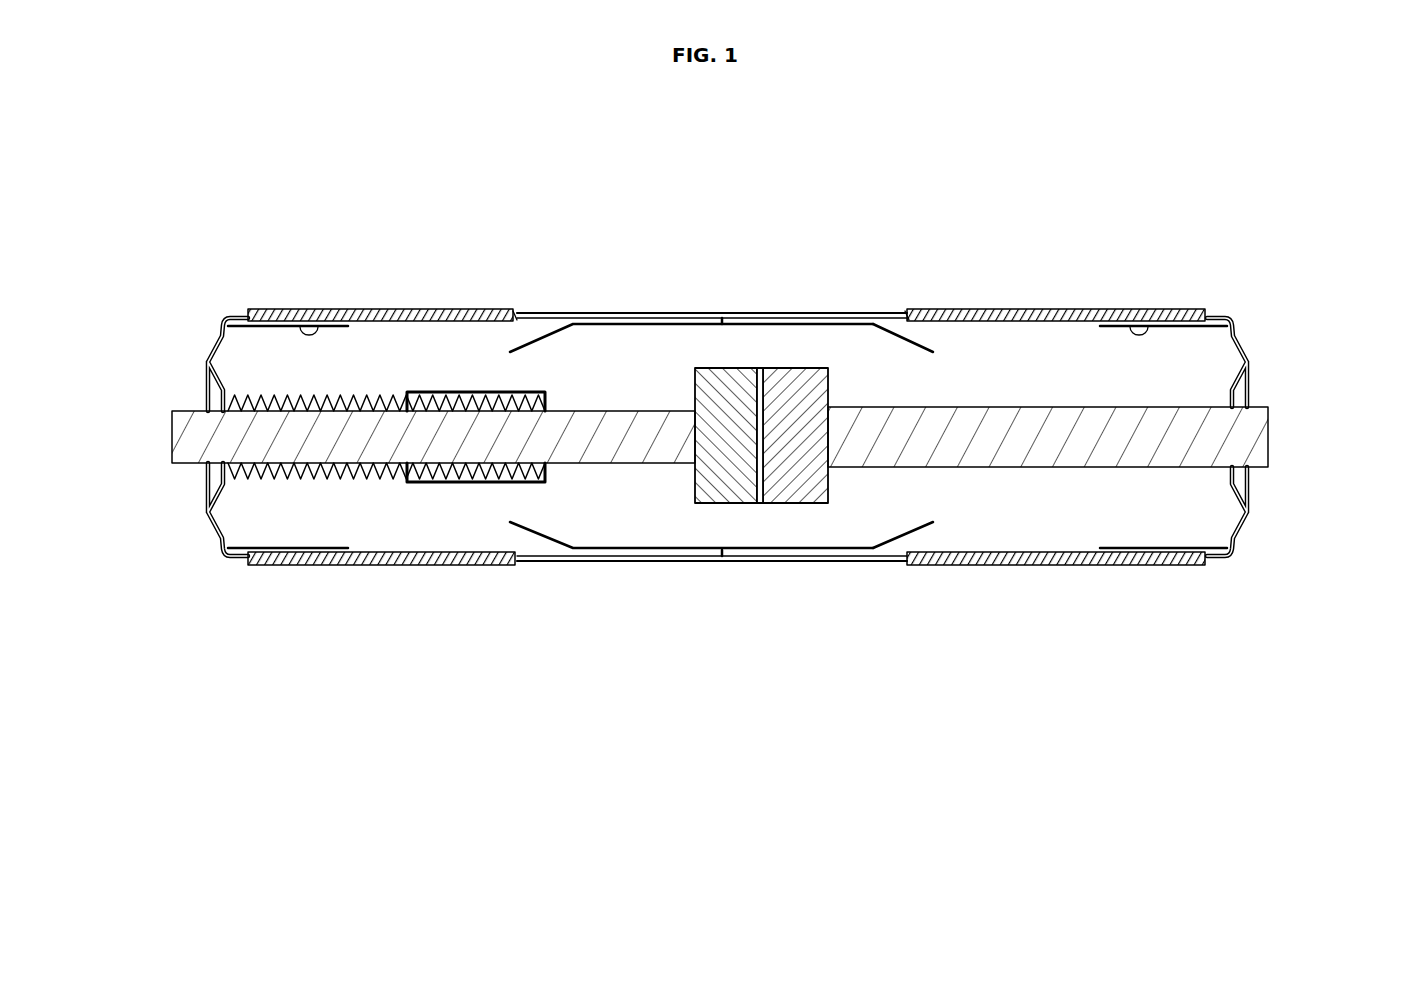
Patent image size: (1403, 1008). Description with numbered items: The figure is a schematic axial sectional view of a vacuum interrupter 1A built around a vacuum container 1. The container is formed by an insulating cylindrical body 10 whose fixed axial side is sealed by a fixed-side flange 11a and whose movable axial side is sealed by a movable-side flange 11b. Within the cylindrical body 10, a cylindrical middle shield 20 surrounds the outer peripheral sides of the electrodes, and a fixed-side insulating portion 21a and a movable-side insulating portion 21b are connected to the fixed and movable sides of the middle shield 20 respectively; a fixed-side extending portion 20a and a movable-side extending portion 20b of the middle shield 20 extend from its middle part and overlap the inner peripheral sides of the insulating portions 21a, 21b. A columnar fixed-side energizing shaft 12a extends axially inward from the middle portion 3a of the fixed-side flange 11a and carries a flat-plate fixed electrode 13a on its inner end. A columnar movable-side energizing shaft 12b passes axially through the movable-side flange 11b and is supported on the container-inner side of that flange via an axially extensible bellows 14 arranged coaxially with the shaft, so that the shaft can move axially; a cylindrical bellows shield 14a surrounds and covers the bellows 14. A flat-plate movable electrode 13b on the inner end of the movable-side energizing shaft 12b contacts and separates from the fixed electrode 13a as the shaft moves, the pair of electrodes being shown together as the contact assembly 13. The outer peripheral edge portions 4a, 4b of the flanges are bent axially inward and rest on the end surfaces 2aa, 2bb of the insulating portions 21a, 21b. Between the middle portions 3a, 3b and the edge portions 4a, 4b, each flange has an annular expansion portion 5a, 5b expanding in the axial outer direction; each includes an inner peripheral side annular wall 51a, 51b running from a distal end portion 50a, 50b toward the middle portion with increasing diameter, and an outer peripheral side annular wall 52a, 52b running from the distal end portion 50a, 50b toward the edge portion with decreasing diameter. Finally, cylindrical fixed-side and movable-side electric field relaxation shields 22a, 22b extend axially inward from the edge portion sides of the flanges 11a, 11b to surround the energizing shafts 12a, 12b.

The vacuum container 1 is at (305, 577).
The vacuum interrupter 1A is at (240, 585).
The insulating cylindrical body 10 is at (739, 352).
The middle shield 20 is at (709, 313).
The fixed-side extending portion 20a is at (890, 327).
The movable-side extending portion 20b is at (555, 328).
The fixed-side insulating portion 21a is at (905, 312).
The movable-side insulating portion 21b is at (514, 312).
The fixed-side electric field relaxation shield 22a is at (1115, 311).
The movable-side electric field relaxation shield 22b is at (333, 312).
The end surface 2aa is at (1228, 314).
The end surface 2bb is at (247, 314).
The middle portion 3a is at (1250, 481).
The middle portion 3b is at (226, 476).
The outer peripheral edge portion 4a is at (1237, 321).
The outer peripheral edge portion 4b is at (228, 319).
The annular expansion portion 5a is at (1303, 348).
The annular expansion portion 5b is at (151, 347).
The distal end portion 50a is at (1248, 371).
The distal end portion 50b is at (207, 363).
The inner peripheral side annular wall 51a is at (1284, 386).
The inner peripheral side annular wall 51b is at (173, 381).
The outer peripheral side annular wall 52a is at (1243, 348).
The outer peripheral side annular wall 52b is at (212, 340).
The fixed-side flange 11a is at (1260, 540).
The movable-side flange 11b is at (228, 549).
The fixed-side energizing shaft 12a is at (1005, 455).
The movable-side energizing shaft 12b is at (365, 440).
The coupling block 13 is at (728, 490).
The fixed electrode 13a is at (790, 502).
The movable electrode 13b is at (748, 502).
The bellows 14 is at (372, 468).
The bellows shield 14a is at (487, 483).